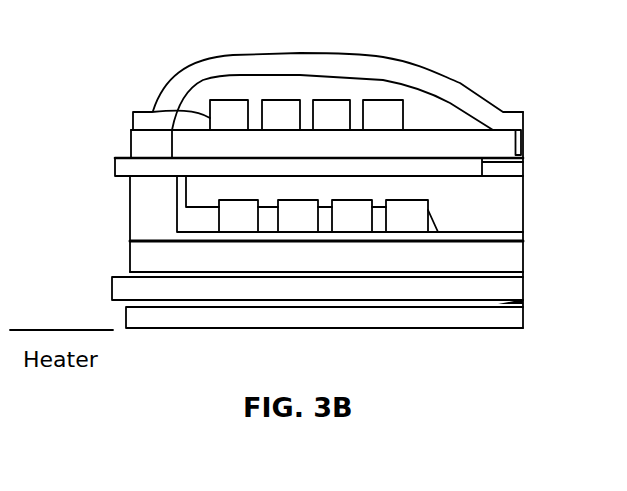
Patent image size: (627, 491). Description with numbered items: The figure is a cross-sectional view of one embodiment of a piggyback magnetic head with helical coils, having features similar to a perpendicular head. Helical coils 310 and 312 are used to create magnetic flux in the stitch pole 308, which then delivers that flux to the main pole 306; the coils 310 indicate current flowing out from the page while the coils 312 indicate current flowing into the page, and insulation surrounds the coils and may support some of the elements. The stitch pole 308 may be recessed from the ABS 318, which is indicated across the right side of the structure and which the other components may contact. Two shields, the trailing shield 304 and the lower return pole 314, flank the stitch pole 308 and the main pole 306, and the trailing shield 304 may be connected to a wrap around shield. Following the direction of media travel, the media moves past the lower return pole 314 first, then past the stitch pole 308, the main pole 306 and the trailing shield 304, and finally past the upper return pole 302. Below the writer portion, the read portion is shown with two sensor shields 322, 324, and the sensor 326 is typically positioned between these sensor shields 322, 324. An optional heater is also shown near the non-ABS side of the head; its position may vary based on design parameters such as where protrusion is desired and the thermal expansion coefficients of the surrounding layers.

The upper return pole 302 is at (460, 83).
The trailing shield 304 is at (525, 142).
The main pole 306 is at (525, 162).
The stitch pole 308 is at (473, 178).
The helical coils 310 is at (152, 112).
The helical coils 312 is at (219, 198).
The lower return pole 314 is at (363, 265).
The ABS 318 is at (533, 245).
The sensor shield 322 is at (112, 288).
The sensor shield 324 is at (126, 315).
The sensor 326 is at (517, 299).